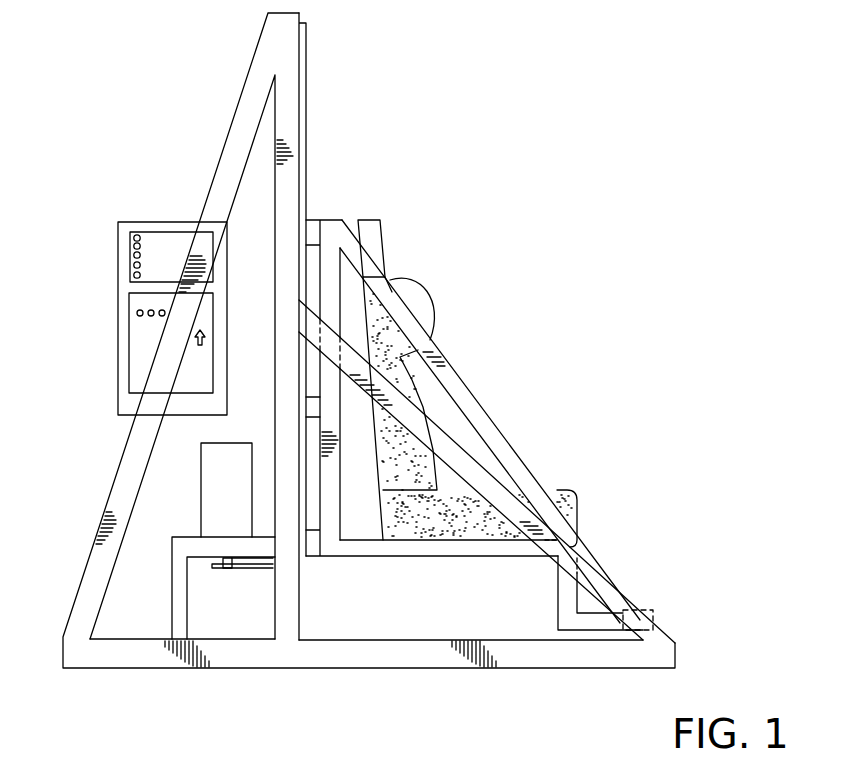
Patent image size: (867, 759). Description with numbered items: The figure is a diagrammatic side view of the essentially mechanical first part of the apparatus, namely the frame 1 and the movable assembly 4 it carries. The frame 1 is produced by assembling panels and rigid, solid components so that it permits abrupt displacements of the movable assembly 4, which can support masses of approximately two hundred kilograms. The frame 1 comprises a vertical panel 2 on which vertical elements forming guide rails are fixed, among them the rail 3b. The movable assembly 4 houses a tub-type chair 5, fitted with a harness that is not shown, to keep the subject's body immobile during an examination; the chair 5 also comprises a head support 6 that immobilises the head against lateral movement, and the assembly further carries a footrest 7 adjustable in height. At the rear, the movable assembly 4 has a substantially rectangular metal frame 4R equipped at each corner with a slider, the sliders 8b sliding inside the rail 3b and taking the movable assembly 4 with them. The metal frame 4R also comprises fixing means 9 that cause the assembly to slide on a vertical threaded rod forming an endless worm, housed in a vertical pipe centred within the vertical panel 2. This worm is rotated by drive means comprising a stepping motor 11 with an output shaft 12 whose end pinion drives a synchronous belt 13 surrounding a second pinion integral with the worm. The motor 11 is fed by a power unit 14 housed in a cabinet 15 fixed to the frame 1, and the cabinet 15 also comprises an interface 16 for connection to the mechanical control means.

The frame 1 is at (342, 672).
The vertical panel 2 is at (273, 160).
The guide rail 3b is at (307, 87).
The movable assembly 4 is at (370, 557).
The metal frame 4R is at (340, 478).
The chair 5 is at (383, 237).
The head support 6 is at (423, 293).
The footrest 7 is at (650, 610).
The slider 8b is at (315, 220).
The fixing means 9 is at (317, 393).
The stepping motor 11 is at (205, 489).
The output shaft 12 is at (226, 568).
The synchronous belt 13 is at (245, 569).
The power unit 14 is at (130, 262).
The cabinet 15 is at (162, 220).
The interface 16 is at (137, 358).